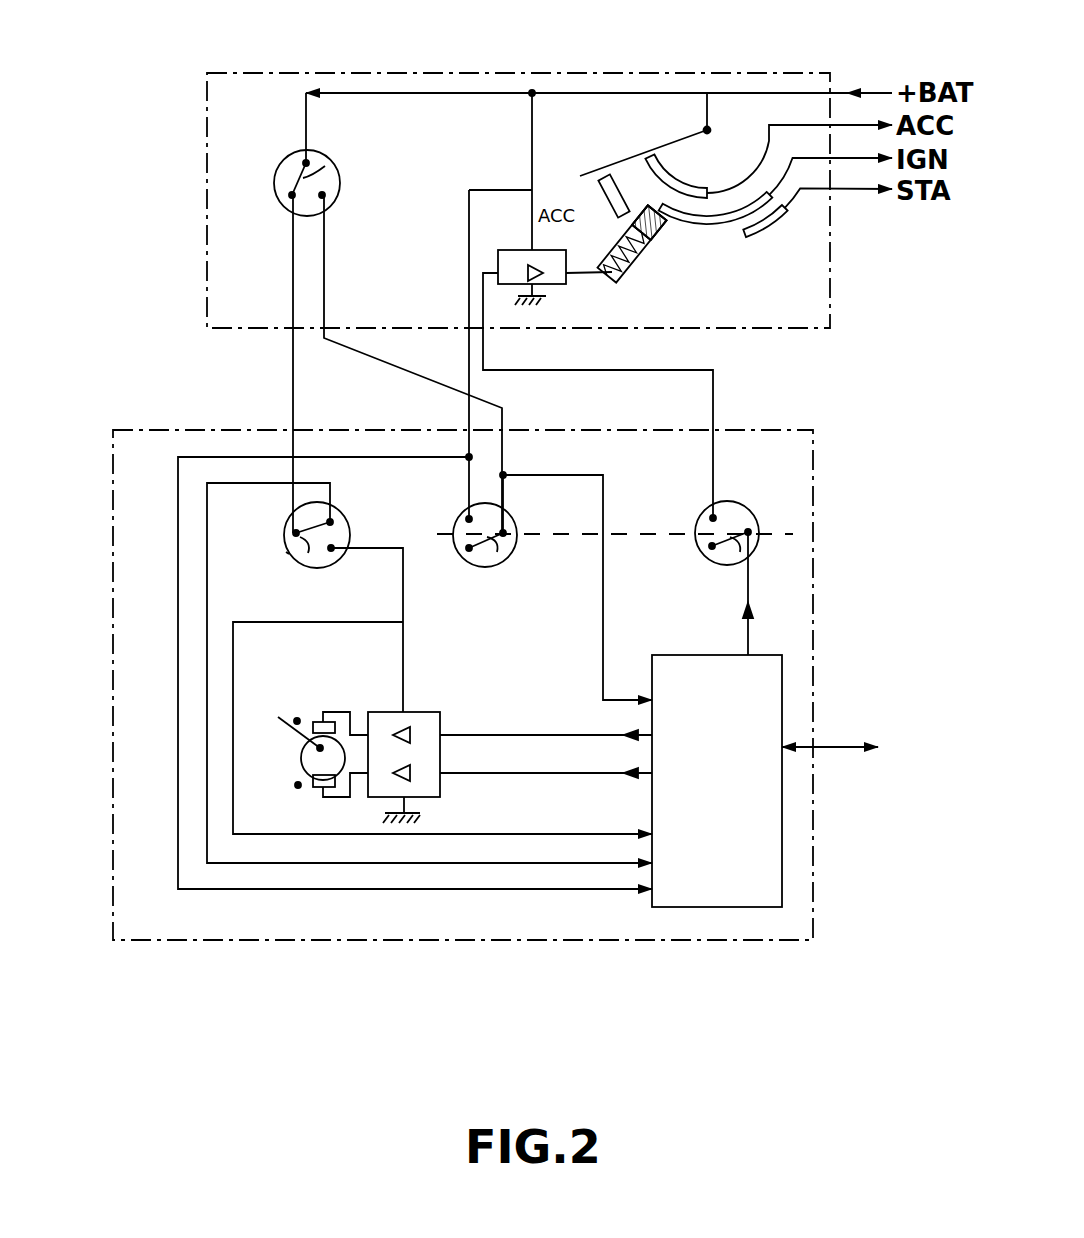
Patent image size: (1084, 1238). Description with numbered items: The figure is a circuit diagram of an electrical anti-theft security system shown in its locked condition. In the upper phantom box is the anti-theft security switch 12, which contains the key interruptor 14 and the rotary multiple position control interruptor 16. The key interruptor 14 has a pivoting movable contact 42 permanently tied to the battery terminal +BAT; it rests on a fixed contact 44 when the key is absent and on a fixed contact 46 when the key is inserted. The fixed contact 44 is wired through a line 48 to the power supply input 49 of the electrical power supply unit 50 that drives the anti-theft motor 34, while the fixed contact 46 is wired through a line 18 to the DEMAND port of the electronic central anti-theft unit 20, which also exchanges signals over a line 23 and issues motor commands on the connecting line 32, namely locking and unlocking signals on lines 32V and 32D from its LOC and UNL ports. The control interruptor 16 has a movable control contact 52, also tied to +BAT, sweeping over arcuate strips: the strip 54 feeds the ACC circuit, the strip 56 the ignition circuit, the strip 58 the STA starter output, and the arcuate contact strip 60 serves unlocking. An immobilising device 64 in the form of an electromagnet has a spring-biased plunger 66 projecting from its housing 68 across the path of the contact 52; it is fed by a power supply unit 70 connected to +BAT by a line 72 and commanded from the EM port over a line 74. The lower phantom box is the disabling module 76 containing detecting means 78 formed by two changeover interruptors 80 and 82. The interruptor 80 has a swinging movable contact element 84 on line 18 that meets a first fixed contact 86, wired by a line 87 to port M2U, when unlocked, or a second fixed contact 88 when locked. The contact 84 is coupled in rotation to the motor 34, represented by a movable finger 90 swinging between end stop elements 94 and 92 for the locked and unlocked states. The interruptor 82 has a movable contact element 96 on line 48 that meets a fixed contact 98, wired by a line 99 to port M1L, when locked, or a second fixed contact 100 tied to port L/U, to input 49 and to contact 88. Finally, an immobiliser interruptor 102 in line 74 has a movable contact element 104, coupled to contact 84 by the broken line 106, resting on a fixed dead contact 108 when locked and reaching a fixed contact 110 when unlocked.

The anti-theft security switch 12 is at (228, 73).
The key interruptor 14 is at (267, 157).
The multiple position control interruptor 16 is at (820, 224).
The line 18 is at (385, 362).
The electronic central anti-theft unit 20 is at (785, 851).
The line 23 is at (823, 746).
The connecting line 32 is at (547, 708).
The line 32V is at (478, 733).
The line 32D is at (510, 775).
The anti-theft motor 34 is at (340, 753).
The pivoting movable contact 42 is at (310, 175).
The fixed contact 44 is at (292, 195).
The fixed contact 46 is at (322, 195).
The line 48 is at (293, 390).
The power supply input 49 is at (403, 622).
The electrical power supply unit 50 is at (434, 812).
The movable control contact 52 is at (589, 172).
The conductive strip 54 is at (687, 176).
The contact strip 56 is at (733, 203).
The contact strip 58 is at (755, 232).
The arcuate contact strip 60 is at (636, 157).
The immobilising device 64 is at (639, 275).
The plunger or core 66 is at (660, 234).
The housing 68 is at (621, 278).
The power supply unit 70 is at (509, 240).
The line 72 is at (532, 125).
The line 74 is at (720, 384).
The disabling module 76 is at (148, 426).
The detecting means 78 is at (292, 590).
The detecting interruptor 80 is at (469, 519).
The detecting interruptor 82 is at (284, 531).
The swinging movable contact element 84 is at (507, 551).
The first fixed contact 86 is at (470, 517).
The line 87 is at (285, 890).
The second fixed contact 88 is at (469, 550).
The movable finger 90 is at (278, 717).
The mechanical end stop element 92 is at (298, 786).
The mechanical end stop element 94 is at (297, 720).
The movable contact element 96 is at (286, 552).
The fixed contact 98 is at (330, 521).
The line 99 is at (377, 863).
The second fixed contact 100 is at (332, 550).
The immobiliser interruptor 102 is at (764, 510).
The movable contact element 104 is at (752, 536).
The broken line 106 is at (631, 531).
The fixed dead contact 108 is at (713, 557).
The fixed contact 110 is at (715, 517).